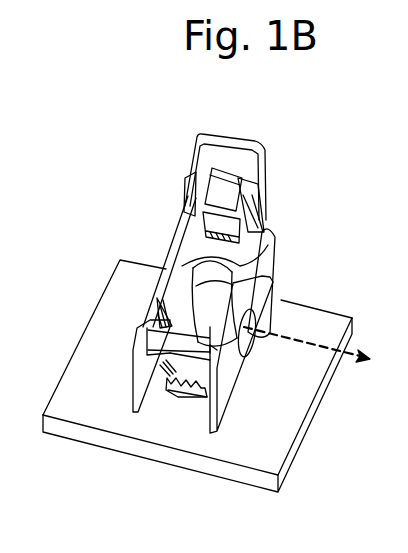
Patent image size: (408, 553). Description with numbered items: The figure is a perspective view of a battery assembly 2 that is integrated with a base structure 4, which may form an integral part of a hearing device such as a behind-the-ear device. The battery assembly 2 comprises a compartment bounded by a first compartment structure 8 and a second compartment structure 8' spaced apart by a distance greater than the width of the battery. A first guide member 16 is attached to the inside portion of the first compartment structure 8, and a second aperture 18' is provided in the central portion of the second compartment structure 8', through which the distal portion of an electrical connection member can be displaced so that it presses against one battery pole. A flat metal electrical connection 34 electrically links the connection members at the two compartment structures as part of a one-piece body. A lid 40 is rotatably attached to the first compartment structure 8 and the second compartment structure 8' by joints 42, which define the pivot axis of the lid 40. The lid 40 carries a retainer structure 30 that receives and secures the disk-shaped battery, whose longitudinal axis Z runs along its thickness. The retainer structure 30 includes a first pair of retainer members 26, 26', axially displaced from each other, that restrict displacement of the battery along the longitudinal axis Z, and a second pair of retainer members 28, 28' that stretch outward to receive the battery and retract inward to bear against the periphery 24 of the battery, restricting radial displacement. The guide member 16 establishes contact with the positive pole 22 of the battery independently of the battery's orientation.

The battery assembly 2 is at (90, 104).
The base structure 4 is at (321, 314).
The longitudinal axis of the battery Z is at (332, 328).
The first compartment structure 8 is at (112, 345).
The second compartment structure 8' is at (270, 365).
The first guide member 16 is at (165, 330).
The second aperture 18' is at (301, 365).
The positive pole 22 is at (243, 298).
The periphery of the battery 24 is at (214, 270).
The first retainer member of the first pair 26 is at (155, 194).
The second retainer member of the first pair 26' is at (280, 192).
The first retainer member of the second pair 28 is at (198, 176).
The second retainer member of the second pair 28' is at (191, 232).
The retainer structure 30 is at (180, 178).
The electrical connection 34 is at (187, 392).
The lid 40 is at (232, 136).
The joints 42 is at (277, 252).